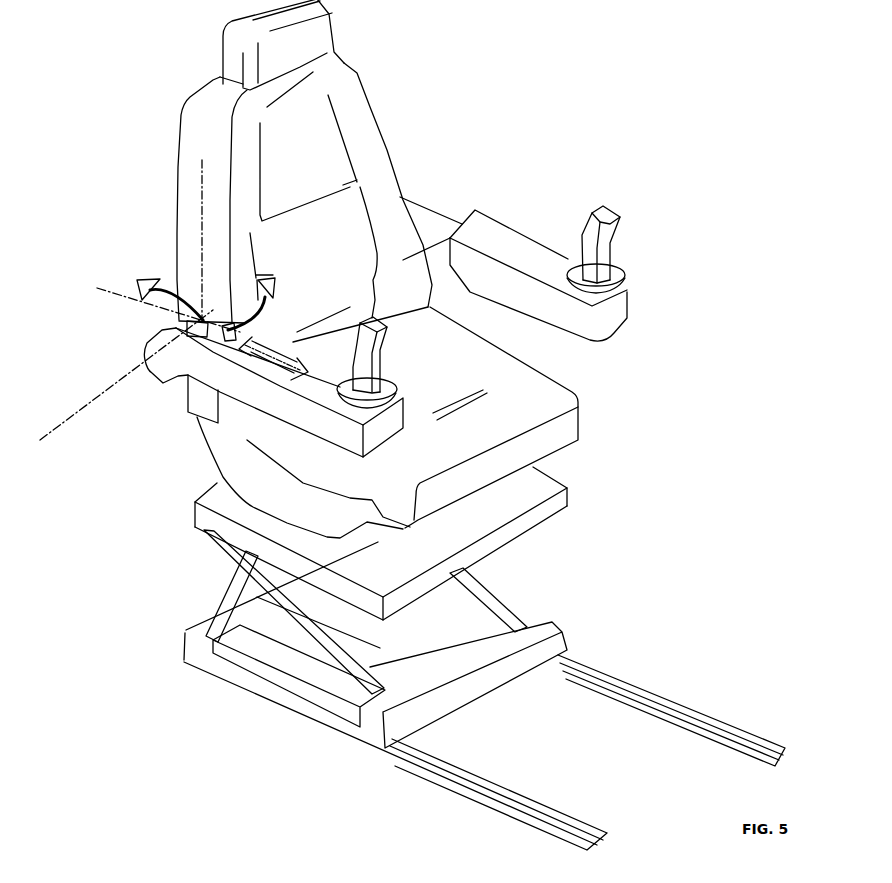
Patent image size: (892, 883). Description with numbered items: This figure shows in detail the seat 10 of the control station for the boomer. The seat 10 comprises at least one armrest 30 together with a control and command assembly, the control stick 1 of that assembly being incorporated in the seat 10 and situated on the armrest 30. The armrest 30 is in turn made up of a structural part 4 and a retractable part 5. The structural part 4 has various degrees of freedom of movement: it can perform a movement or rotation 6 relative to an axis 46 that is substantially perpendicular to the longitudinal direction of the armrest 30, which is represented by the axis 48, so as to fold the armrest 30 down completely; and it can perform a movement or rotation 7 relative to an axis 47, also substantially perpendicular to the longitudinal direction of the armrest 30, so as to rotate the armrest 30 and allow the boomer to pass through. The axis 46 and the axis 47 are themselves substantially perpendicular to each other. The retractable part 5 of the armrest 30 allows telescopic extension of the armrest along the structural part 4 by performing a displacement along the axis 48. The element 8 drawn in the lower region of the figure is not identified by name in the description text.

The control stick 1 is at (607, 240).
The structural part 4 is at (428, 218).
The retractable part 5 is at (508, 240).
The movement or rotation 6 is at (170, 290).
The movement or rotation 7 is at (240, 300).
The base rail 8 is at (543, 650).
The seat 10 is at (530, 400).
The armrest 30 is at (648, 298).
The axis 46 is at (75, 423).
The axis 47 is at (200, 187).
The axis 48 is at (313, 377).